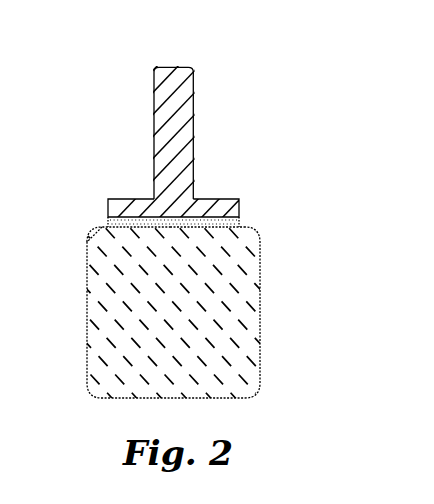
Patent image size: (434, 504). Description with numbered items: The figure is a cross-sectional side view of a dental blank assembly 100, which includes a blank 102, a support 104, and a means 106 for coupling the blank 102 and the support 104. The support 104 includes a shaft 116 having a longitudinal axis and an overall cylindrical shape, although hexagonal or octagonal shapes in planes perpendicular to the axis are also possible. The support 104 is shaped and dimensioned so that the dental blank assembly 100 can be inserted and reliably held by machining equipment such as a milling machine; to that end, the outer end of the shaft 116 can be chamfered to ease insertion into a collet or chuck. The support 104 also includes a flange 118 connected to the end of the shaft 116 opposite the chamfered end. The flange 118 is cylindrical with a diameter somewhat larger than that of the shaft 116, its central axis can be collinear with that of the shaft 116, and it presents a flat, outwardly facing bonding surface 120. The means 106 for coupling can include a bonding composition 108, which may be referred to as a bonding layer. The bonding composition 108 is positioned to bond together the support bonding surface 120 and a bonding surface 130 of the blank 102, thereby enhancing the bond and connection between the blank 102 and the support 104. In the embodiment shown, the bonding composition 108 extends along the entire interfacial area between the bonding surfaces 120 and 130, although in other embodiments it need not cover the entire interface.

The dental blank assembly 100 is at (218, 55).
The blank 102 is at (256, 317).
The support 104 is at (200, 135).
The means for coupling the blank and the support 106 is at (213, 228).
The bonding composition 108 is at (120, 227).
The shaft 116 is at (158, 155).
The flange 118 is at (228, 202).
The bonding surface 120 is at (109, 227).
The bonding surface of the blank 130 is at (238, 218).